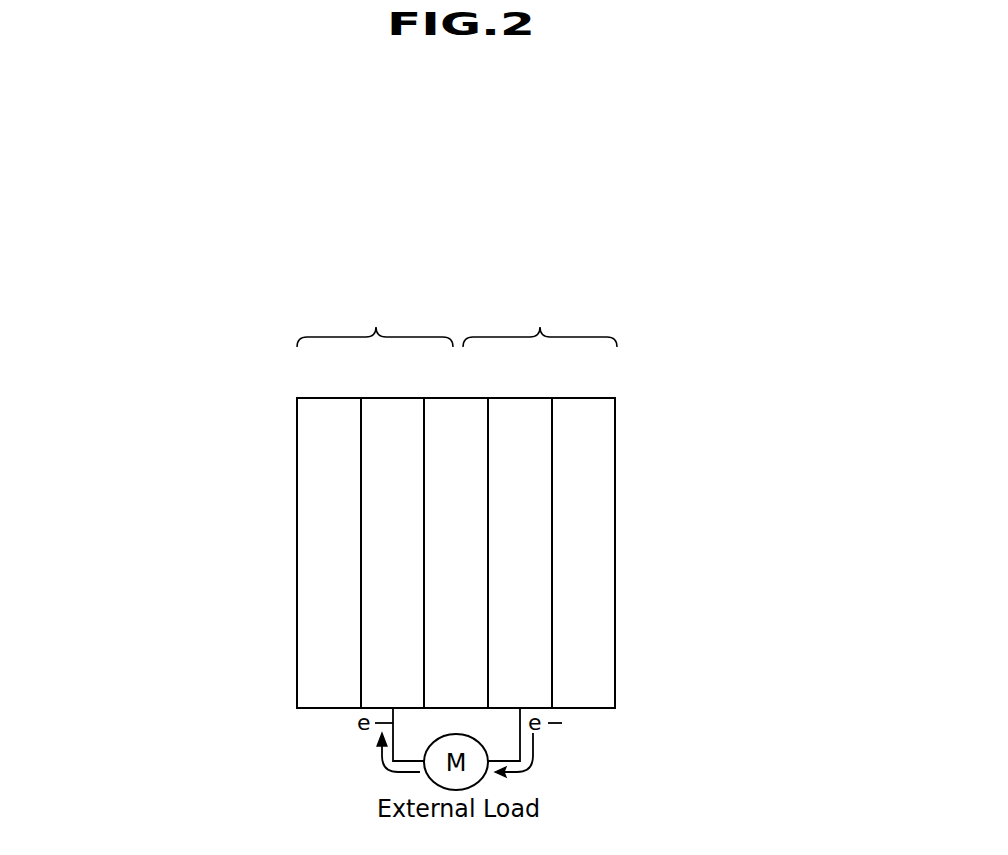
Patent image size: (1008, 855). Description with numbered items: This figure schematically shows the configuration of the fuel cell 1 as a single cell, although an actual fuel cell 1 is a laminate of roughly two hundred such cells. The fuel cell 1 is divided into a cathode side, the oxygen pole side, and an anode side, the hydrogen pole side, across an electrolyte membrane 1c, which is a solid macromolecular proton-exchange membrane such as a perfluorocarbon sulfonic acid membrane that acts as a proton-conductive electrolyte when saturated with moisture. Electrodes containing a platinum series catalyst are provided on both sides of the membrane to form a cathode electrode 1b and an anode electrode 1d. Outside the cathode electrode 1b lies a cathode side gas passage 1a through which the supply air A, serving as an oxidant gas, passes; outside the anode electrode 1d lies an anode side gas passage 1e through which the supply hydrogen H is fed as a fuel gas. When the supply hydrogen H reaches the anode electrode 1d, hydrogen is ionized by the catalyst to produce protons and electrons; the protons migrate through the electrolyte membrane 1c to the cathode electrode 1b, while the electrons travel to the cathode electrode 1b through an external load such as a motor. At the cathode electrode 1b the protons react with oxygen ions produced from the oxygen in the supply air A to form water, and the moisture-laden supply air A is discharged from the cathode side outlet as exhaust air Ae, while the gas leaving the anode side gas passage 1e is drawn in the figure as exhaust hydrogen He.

The fuel cell 1 is at (460, 247).
The cathode side gas passage 1a is at (329, 553).
The cathode electrode 1b is at (392, 553).
The electrolyte membrane 1c is at (456, 553).
The anode electrode 1d is at (520, 553).
The anode side gas passage 1e is at (583, 553).
The supply air A is at (330, 398).
The supply hydrogen H is at (585, 398).
The exhaust air Ae is at (330, 708).
The exhaust hydrogen He is at (584, 708).